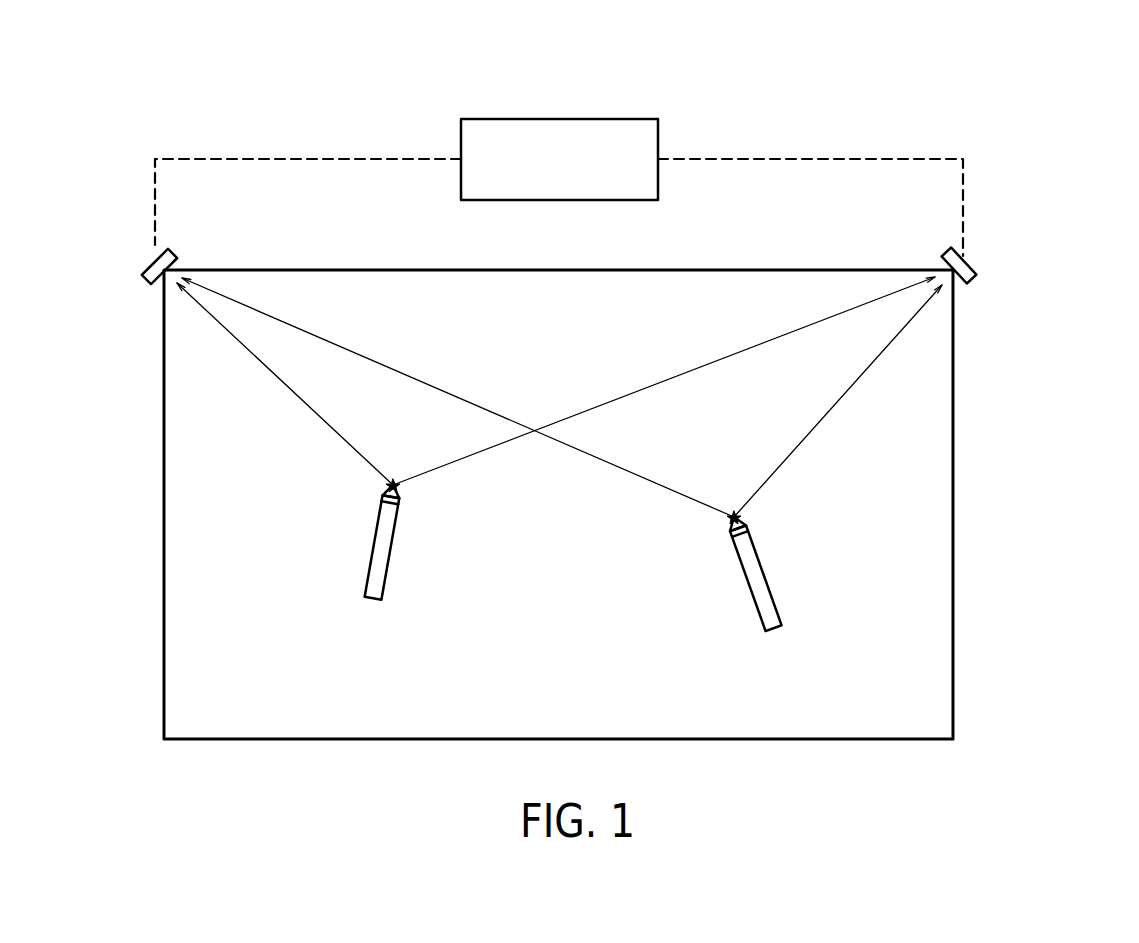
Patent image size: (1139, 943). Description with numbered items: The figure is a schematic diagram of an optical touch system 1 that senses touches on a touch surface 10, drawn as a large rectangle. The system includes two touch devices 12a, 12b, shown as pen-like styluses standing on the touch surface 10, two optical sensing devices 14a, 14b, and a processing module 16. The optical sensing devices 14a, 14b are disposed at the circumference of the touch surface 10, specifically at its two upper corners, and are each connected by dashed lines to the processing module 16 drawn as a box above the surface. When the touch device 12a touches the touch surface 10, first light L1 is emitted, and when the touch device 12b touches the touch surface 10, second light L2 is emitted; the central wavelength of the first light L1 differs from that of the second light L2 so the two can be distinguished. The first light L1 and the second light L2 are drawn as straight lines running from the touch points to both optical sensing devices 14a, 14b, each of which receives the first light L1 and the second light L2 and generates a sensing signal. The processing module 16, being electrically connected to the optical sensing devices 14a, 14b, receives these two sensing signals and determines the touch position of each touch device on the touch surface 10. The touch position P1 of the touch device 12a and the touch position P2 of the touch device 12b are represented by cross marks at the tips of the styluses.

The optical touch system 1 is at (1067, 108).
The touch surface 10 is at (365, 270).
The touch device 12a is at (387, 552).
The touch device 12b is at (760, 595).
The optical sensing device 14a is at (147, 267).
The optical sensing device 14b is at (974, 266).
The processing module 16 is at (640, 119).
The touch position P1 is at (395, 478).
The touch position P2 is at (731, 512).
The first light L1 is at (352, 450).
The second light L2 is at (642, 483).